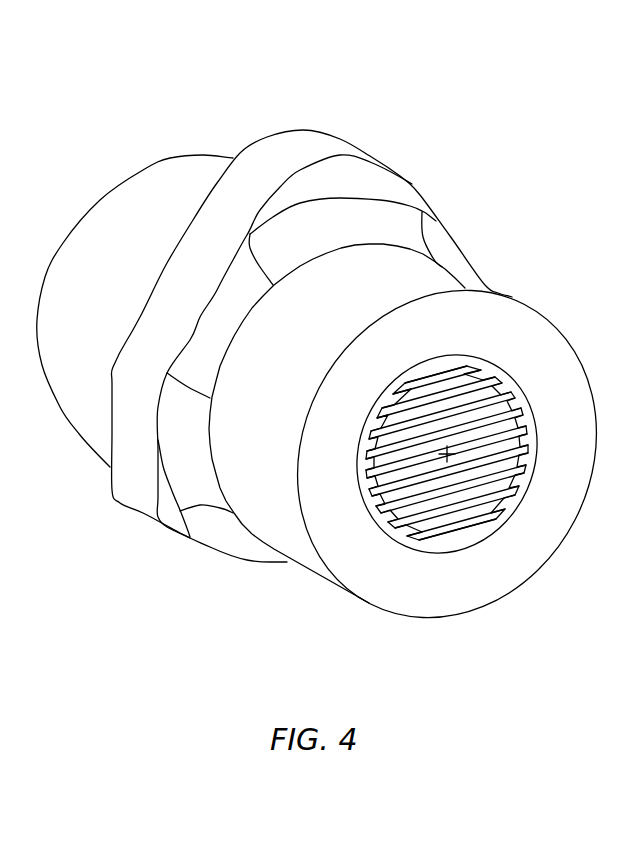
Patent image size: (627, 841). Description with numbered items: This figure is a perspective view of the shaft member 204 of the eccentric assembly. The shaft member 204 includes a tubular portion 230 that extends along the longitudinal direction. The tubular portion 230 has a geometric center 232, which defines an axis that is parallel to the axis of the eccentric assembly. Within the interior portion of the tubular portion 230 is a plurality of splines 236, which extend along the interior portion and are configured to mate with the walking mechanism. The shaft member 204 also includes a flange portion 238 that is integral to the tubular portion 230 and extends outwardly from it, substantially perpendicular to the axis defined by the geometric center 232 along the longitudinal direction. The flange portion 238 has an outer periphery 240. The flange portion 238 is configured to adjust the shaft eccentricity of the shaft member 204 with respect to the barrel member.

The shaft member 204 is at (526, 100).
The tubular portion 230 is at (447, 283).
The geometric center 232 is at (453, 450).
The plurality of splines 236 is at (411, 497).
The flange portion 238 is at (400, 180).
The outer periphery 240 is at (326, 150).